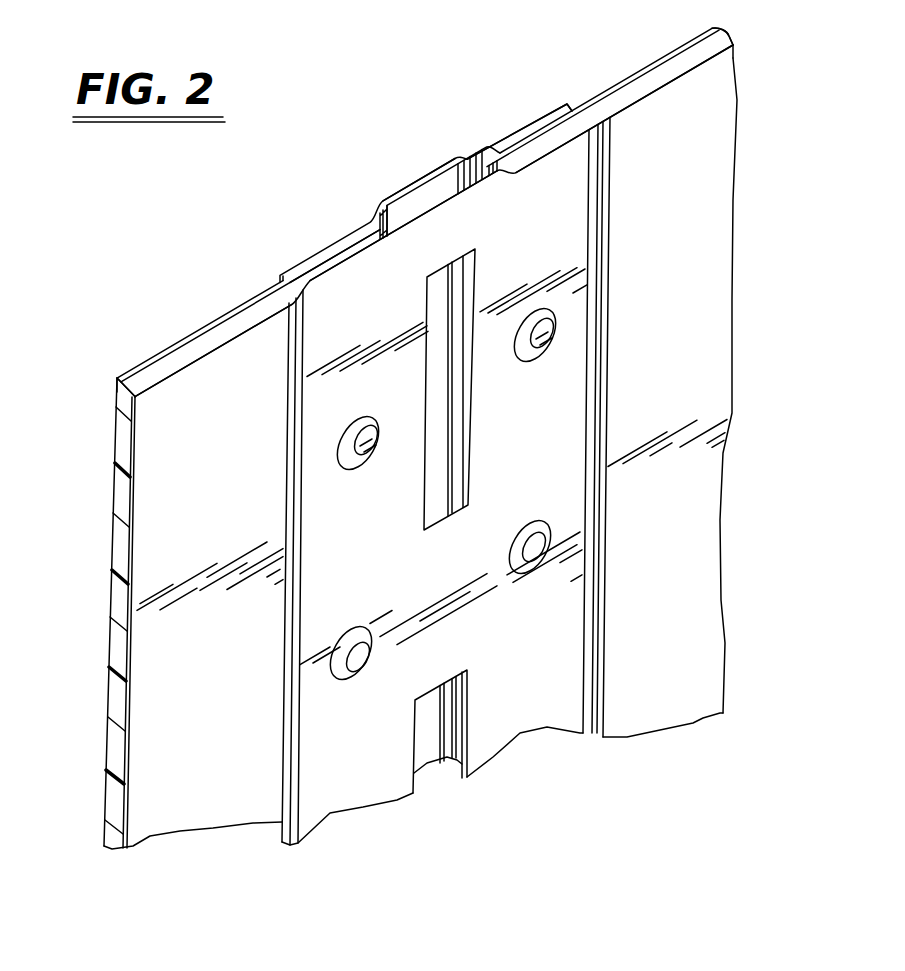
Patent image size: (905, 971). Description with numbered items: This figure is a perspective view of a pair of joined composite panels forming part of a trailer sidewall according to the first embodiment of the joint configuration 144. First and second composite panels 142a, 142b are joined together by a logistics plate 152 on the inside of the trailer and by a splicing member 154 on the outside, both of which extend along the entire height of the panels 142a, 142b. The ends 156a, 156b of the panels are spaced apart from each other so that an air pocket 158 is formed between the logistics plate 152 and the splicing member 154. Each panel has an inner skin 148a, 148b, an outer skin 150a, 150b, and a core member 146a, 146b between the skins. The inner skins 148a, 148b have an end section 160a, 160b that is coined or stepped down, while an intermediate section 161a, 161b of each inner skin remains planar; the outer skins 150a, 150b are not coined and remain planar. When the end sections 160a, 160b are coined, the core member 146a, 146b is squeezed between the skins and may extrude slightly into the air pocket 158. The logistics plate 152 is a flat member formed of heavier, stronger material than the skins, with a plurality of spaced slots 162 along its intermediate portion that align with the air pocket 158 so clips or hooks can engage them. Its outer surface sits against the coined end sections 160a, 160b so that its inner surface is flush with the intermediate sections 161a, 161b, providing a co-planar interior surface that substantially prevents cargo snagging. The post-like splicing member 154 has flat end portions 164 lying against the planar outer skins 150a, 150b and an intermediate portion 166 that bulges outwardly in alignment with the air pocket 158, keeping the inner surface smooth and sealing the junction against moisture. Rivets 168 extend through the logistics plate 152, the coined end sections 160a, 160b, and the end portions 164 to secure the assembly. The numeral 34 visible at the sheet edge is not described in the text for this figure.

The element from adjacent figure 34 is at (149, 6).
The first composite panel 142a is at (147, 773).
The second composite panel 142b is at (635, 717).
The joint configuration 144 is at (413, 181).
The core member 146a is at (193, 347).
The core member 146b is at (703, 50).
The inner skin 148a is at (247, 297).
The inner skin 148b is at (733, 58).
The outer skin 150a is at (130, 378).
The outer skin 150b is at (640, 67).
The logistics plate 152 is at (503, 727).
The splicing member 154 is at (422, 170).
The end of panel 156a is at (393, 227).
The end of panel 156b is at (488, 183).
The air pocket 158 is at (430, 193).
The end section 160a is at (350, 237).
The end section 160b is at (550, 117).
The intermediate section 161a is at (185, 367).
The intermediate section 161b is at (645, 90).
The slots 162 is at (457, 460).
The end portions 164 is at (302, 263).
The intermediate portion 166 is at (410, 187).
The rivets 168 is at (358, 433).